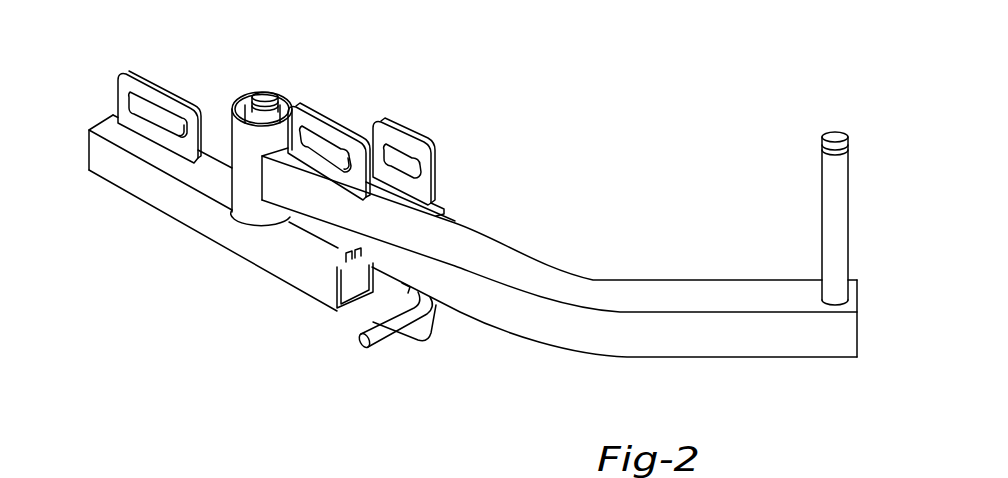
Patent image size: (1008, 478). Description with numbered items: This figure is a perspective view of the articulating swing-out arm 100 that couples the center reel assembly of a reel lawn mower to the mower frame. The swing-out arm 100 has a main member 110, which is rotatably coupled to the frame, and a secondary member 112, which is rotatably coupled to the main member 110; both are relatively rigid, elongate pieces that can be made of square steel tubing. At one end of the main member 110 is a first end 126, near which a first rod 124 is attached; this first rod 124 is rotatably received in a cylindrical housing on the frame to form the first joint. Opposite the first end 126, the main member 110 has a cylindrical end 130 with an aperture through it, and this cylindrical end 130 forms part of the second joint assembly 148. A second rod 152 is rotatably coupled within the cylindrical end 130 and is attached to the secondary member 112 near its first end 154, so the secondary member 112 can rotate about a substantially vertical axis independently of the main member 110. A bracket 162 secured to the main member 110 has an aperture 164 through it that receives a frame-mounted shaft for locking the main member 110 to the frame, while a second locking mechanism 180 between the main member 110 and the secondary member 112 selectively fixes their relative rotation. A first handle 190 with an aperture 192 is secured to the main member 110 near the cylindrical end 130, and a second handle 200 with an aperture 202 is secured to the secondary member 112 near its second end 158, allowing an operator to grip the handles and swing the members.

The swing-out arm 100 is at (531, 136).
The main member 110 is at (511, 268).
The secondary member 112 is at (178, 203).
The first rod 124 is at (833, 185).
The first end 126 is at (837, 342).
The cylindrical end 130 is at (230, 117).
The second joint assembly 148 is at (247, 203).
The second rod 152 is at (264, 93).
The first end 154 is at (293, 280).
The second end 158 is at (95, 148).
The bracket 162 is at (400, 140).
The aperture 164 is at (407, 170).
The second locking mechanism 180 is at (390, 292).
The first handle 190 is at (307, 123).
The aperture 192 is at (330, 163).
The second handle 200 is at (122, 88).
The aperture 202 is at (145, 122).